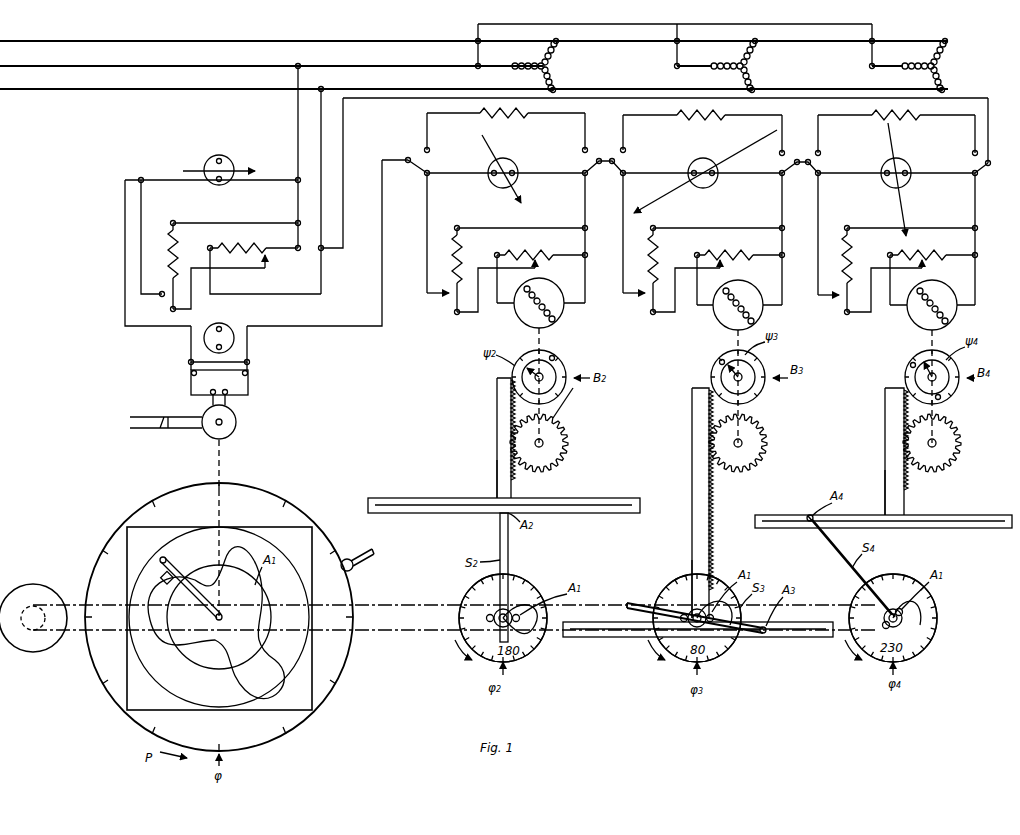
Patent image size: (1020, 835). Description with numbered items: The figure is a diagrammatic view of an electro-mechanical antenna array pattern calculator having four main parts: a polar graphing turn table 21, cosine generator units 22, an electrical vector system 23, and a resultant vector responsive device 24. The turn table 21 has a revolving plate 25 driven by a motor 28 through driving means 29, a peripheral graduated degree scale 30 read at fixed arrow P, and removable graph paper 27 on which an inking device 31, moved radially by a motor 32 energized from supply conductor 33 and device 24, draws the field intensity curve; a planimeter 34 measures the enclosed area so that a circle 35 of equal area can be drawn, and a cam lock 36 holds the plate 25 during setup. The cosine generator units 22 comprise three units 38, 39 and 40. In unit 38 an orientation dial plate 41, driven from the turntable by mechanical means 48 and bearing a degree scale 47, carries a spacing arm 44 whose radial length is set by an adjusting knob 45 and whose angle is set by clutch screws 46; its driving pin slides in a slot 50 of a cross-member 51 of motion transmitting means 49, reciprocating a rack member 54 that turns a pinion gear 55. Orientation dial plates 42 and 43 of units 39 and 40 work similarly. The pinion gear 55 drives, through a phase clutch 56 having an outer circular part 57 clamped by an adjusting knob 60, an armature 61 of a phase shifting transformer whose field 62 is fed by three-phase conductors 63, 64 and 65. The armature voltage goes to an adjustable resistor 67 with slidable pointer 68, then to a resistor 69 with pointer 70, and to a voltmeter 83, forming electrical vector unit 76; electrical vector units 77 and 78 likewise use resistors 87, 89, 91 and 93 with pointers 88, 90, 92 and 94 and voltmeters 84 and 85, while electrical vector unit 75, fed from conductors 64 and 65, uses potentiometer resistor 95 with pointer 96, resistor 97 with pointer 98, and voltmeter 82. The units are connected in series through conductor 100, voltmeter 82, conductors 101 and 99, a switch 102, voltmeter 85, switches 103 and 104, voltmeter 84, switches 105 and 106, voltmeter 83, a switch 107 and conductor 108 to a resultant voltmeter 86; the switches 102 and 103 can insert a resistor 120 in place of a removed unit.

The polar graphing turn table 21 is at (374, 684).
The cosine generator units 22 is at (752, 696).
The electrical vector system 23 is at (609, 222).
The resultant vector responsive device 24 is at (248, 383).
The revolving plate 25 is at (300, 727).
The graph paper 27 is at (136, 705).
The motor 28 is at (44, 588).
The driving means 29 is at (78, 636).
The graduated degree scale 30 is at (118, 698).
The inking device 31 is at (219, 630).
The motor 32 is at (236, 416).
The electrical supply conductor 33 is at (163, 428).
The planimeter 34 is at (172, 565).
The circle 35 is at (206, 660).
The cam lock 36 is at (348, 558).
The cosine generator unit 38 is at (534, 554).
The cosine generator unit 39 is at (747, 554).
The cosine generator unit 40 is at (954, 554).
The orientation dial plate 41 is at (540, 643).
The orientation dial plate 42 is at (735, 643).
The orientation dial plate 43 is at (937, 632).
The spacing arm 44 is at (500, 542).
The adjusting knob 45 is at (488, 612).
The clutch screws 46 is at (520, 612).
The graduated degree scale 47 is at (480, 658).
The mechanical means 48 is at (413, 604).
The motion transmitting means 49 is at (497, 490).
The slot 50 is at (596, 498).
The cross-member 51 is at (586, 513).
The rack member 54 is at (497, 424).
The pinion gear 55 is at (568, 432).
The phase clutch 56 is at (555, 356).
The outer circular part 57 is at (566, 370).
The adjusting knob 60 is at (530, 362).
The armature 61 is at (554, 300).
The field 62 is at (549, 62).
The conductor 63 is at (66, 41).
The conductor 64 is at (73, 66).
The conductor 65 is at (73, 89).
The adjustable resistor 67 is at (536, 252).
The slidable pointer 68 is at (538, 268).
The adjustable resistor 69 is at (461, 260).
The slidable pointer 70 is at (434, 298).
The electrical vector unit 75 is at (272, 214).
The electrical vector unit 76 is at (566, 217).
The electrical vector unit 77 is at (767, 217).
The electrical vector unit 78 is at (967, 219).
The voltmeter 82 is at (229, 162).
The voltmeter 83 is at (514, 165).
The voltmeter 84 is at (712, 163).
The voltmeter 85 is at (905, 163).
The resultant voltmeter 86 is at (228, 323).
The adjustable resistor 87 is at (736, 252).
The slidable pointer 88 is at (727, 268).
The adjustable resistor 89 is at (660, 260).
The pointer 90 is at (631, 298).
The adjustable resistor 91 is at (930, 252).
The slidable pointer 92 is at (928, 268).
The adjustable resistor 93 is at (856, 262).
The pointer 94 is at (822, 298).
The potentiometer resistor 95 is at (242, 246).
The slidable pointer 96 is at (268, 268).
The potentiometer resistor 97 is at (178, 252).
The slidable pointer 98 is at (152, 293).
The conductor 99 is at (343, 155).
The conductor 100 is at (125, 310).
The conductor 101 is at (298, 212).
The switch 102 is at (972, 164).
The switch 103 is at (822, 160).
The switch 104 is at (784, 168).
The switch 105 is at (630, 161).
The switch 106 is at (596, 164).
The switch 107 is at (416, 155).
The conductor 108 is at (382, 295).
The resistor 120 is at (508, 118).